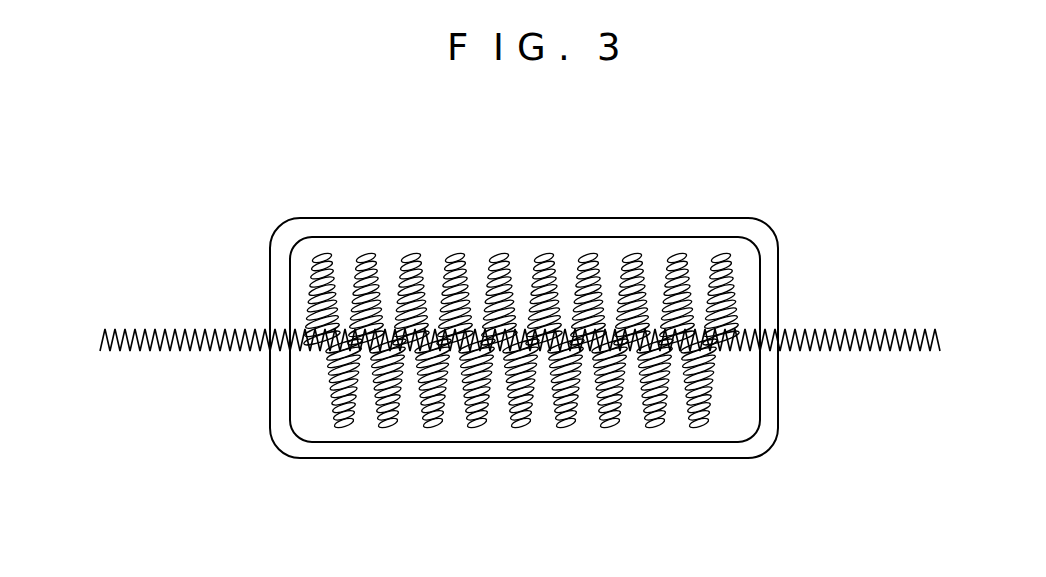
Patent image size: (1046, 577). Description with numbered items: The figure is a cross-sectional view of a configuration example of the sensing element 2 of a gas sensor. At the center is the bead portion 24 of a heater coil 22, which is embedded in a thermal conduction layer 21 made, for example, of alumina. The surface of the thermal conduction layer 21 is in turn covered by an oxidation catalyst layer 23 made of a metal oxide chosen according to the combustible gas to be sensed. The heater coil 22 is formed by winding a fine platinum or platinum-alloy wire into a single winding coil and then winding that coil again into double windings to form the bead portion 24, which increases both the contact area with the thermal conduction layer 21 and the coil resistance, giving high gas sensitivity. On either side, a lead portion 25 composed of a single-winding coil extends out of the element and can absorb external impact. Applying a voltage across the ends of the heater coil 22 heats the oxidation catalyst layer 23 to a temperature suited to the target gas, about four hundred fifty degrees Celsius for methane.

The sensing element 2 is at (564, 298).
The thermal conduction layer 21 is at (745, 398).
The heater coil 22 is at (690, 277).
The oxidation catalyst layer 23 is at (390, 218).
The bead portion 24 is at (517, 428).
The lead portion 25 is at (182, 328).